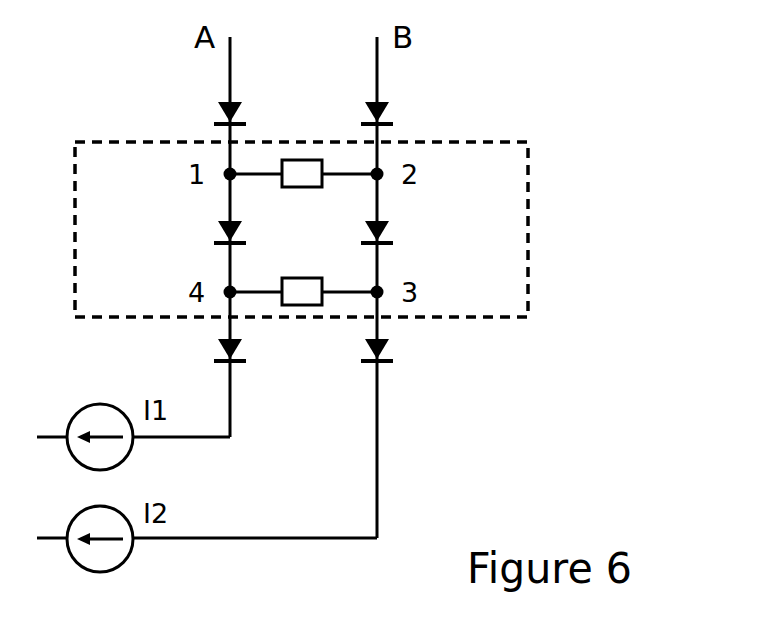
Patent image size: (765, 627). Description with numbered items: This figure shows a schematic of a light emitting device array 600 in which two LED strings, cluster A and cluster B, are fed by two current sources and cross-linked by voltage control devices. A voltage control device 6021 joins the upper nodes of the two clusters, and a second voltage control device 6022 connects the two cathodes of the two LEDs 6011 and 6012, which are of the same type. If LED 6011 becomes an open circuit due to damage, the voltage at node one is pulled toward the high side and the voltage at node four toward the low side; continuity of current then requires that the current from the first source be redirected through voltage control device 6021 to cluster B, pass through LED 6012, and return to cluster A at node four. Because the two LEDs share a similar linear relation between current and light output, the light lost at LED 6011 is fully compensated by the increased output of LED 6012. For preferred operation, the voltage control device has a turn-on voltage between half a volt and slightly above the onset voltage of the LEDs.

The protection circuit 600 is at (528, 156).
The voltage control device 6021 is at (299, 148).
The second voltage control device 6022 is at (306, 315).
The LED 6011 is at (210, 228).
The LED 6012 is at (393, 225).